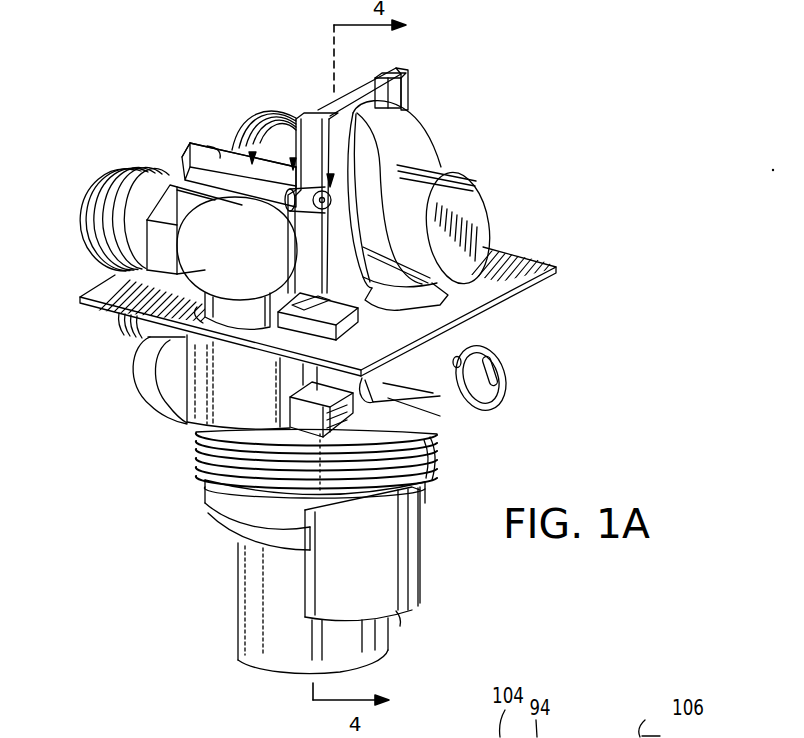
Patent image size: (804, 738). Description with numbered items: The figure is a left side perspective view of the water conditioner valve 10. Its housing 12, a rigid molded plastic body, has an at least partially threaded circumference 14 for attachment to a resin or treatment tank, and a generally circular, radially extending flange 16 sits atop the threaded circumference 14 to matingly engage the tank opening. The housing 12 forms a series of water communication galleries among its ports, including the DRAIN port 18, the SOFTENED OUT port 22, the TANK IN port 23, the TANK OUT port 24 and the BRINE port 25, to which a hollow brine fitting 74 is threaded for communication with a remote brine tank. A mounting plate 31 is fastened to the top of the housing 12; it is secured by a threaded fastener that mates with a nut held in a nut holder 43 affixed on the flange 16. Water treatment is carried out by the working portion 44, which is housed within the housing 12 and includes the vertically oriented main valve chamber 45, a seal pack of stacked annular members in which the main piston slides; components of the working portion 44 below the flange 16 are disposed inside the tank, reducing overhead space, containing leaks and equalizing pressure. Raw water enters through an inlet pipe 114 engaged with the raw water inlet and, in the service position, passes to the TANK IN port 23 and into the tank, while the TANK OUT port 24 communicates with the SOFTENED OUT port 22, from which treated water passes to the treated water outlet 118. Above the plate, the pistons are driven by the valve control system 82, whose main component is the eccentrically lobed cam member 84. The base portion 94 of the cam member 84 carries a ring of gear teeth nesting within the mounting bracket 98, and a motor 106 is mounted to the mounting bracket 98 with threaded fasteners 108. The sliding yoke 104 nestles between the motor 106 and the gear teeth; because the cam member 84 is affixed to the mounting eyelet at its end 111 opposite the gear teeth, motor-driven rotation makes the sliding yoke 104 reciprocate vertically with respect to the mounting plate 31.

The water conditioner valve 10 is at (652, 318).
The housing 12 is at (418, 578).
The partially threaded circumference 14 is at (441, 448).
The flange 16 is at (172, 421).
The DRAIN port 18 is at (495, 392).
The SOFTENED OUT port 22 is at (148, 378).
The TANK IN port 23 is at (407, 617).
The TANK OUT port 24 is at (262, 667).
The BRINE port 25 is at (163, 337).
The mounting plate 31 is at (556, 272).
The nut holder 43 is at (498, 400).
The working portion 44 is at (160, 593).
The main valve chamber 45 is at (425, 324).
The brine fitting 74 is at (117, 320).
The valve control system 82 is at (252, 150).
The cam member 84 is at (203, 148).
The base portion 94 is at (296, 113).
The mounting bracket 98 is at (406, 95).
The sliding yoke 104 is at (391, 72).
The motor 106 is at (431, 147).
The threaded fasteners 108 is at (332, 198).
The end 111 is at (202, 137).
The inlet pipe 114 is at (247, 126).
The treated water outlet 118 is at (101, 237).